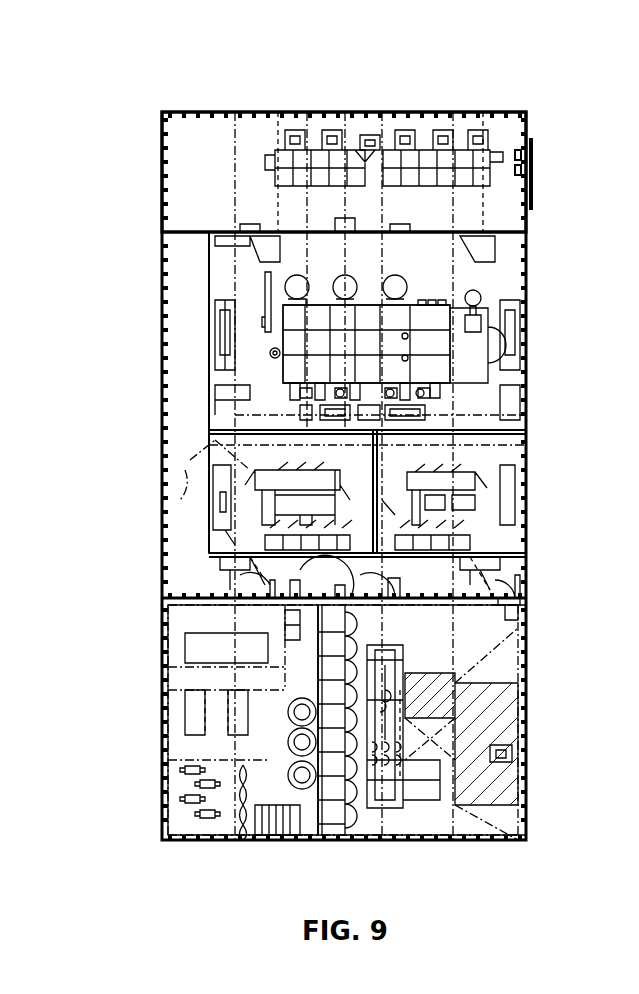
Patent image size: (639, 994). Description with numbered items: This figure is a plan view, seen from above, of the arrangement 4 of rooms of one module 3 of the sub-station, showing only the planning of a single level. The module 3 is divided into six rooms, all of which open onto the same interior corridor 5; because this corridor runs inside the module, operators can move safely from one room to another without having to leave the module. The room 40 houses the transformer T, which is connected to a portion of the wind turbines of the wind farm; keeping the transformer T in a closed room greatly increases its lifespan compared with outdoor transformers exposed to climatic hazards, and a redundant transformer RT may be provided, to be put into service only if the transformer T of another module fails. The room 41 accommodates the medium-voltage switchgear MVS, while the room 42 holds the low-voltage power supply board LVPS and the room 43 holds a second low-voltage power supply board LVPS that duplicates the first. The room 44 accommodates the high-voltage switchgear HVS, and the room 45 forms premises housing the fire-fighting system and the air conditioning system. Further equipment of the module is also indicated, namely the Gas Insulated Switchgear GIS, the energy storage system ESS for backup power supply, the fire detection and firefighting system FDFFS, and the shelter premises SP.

The module 3 is at (331, 103).
The medium-voltage switchgear MVS is at (527, 150).
The Gas Insulated Switchgear GIS is at (536, 145).
The room 41 is at (518, 175).
The redundant transformer RT is at (412, 292).
The transformer T is at (430, 298).
The fire detection and firefighting system FDFFS is at (266, 312).
The energy storage system ESS is at (270, 352).
The low-voltage power supply board LVPS is at (335, 470).
The room 42 is at (265, 455).
The room 40 is at (490, 400).
The room 43 is at (478, 522).
The arrangement of rooms 4 is at (128, 537).
The interior corridor 5 is at (188, 578).
The high-voltage switchgear HVS is at (518, 620).
The room 45 is at (188, 822).
The shelter premises SP is at (283, 828).
The room 44 is at (430, 822).